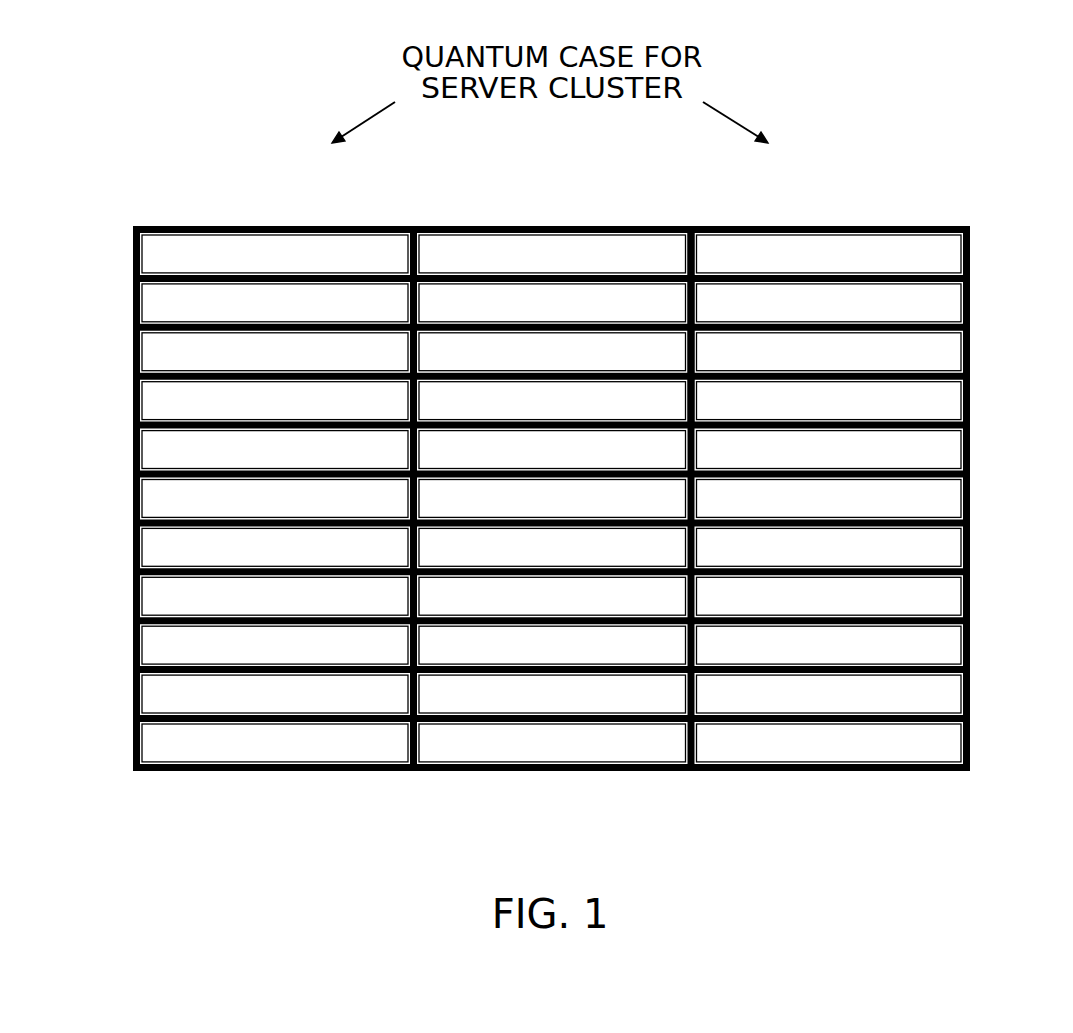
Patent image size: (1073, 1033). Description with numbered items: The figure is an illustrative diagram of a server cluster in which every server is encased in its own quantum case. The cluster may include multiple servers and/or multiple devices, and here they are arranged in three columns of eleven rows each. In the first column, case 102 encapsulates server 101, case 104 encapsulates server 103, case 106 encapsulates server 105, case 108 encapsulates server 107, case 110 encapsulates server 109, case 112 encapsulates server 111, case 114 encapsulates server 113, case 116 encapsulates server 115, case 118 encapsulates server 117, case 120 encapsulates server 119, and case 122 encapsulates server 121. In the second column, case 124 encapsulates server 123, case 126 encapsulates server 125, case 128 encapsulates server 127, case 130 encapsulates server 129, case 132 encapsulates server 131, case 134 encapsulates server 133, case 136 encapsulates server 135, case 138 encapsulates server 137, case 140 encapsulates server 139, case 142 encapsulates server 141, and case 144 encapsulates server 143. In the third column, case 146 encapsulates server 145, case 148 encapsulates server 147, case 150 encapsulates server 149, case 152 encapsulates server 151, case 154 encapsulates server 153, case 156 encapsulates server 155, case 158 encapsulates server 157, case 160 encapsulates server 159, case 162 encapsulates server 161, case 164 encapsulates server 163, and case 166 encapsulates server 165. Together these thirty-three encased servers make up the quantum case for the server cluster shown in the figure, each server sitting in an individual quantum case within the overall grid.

The server 101 is at (254, 265).
The server 103 is at (254, 265).
The server 105 is at (275, 352).
The server 107 is at (275, 401).
The server 109 is at (275, 450).
The server 111 is at (275, 499).
The server 113 is at (275, 547).
The server 115 is at (275, 596).
The server 117 is at (275, 645).
The server 119 is at (275, 694).
The server 121 is at (275, 743).
The server 123 is at (531, 265).
The server 125 is at (531, 265).
The server 127 is at (552, 352).
The server 129 is at (552, 401).
The server 131 is at (552, 450).
The server 133 is at (552, 499).
The server 135 is at (552, 547).
The server 137 is at (552, 596).
The server 139 is at (552, 645).
The server 141 is at (552, 694).
The server 143 is at (552, 743).
The server 145 is at (808, 265).
The server 147 is at (808, 265).
The server 149 is at (829, 352).
The server 151 is at (829, 401).
The server 153 is at (829, 450).
The server 155 is at (829, 499).
The server 157 is at (829, 547).
The server 159 is at (829, 596).
The server 161 is at (829, 645).
The server 163 is at (829, 694).
The server 165 is at (829, 743).
The case 102 is at (133, 243).
The case 104 is at (100, 302).
The case 106 is at (100, 351).
The case 108 is at (100, 400).
The case 110 is at (100, 449).
The case 112 is at (100, 498).
The case 114 is at (100, 547).
The case 116 is at (100, 596).
The case 118 is at (100, 645).
The case 120 is at (100, 694).
The case 122 is at (100, 743).
The case 124 is at (692, 258).
The case 126 is at (692, 306).
The case 128 is at (692, 355).
The case 130 is at (692, 403).
The case 132 is at (633, 477).
The case 134 is at (620, 525).
The case 136 is at (610, 574).
The case 138 is at (602, 623).
The case 140 is at (467, 672).
The case 142 is at (460, 721).
The case 144 is at (444, 771).
The case 146 is at (970, 243).
The case 148 is at (1003, 302).
The case 150 is at (1003, 351).
The case 152 is at (1003, 400).
The case 154 is at (1003, 449).
The case 156 is at (1003, 498).
The case 158 is at (1003, 547).
The case 160 is at (1003, 596).
The case 162 is at (1003, 645).
The case 164 is at (1003, 694).
The case 166 is at (1003, 743).